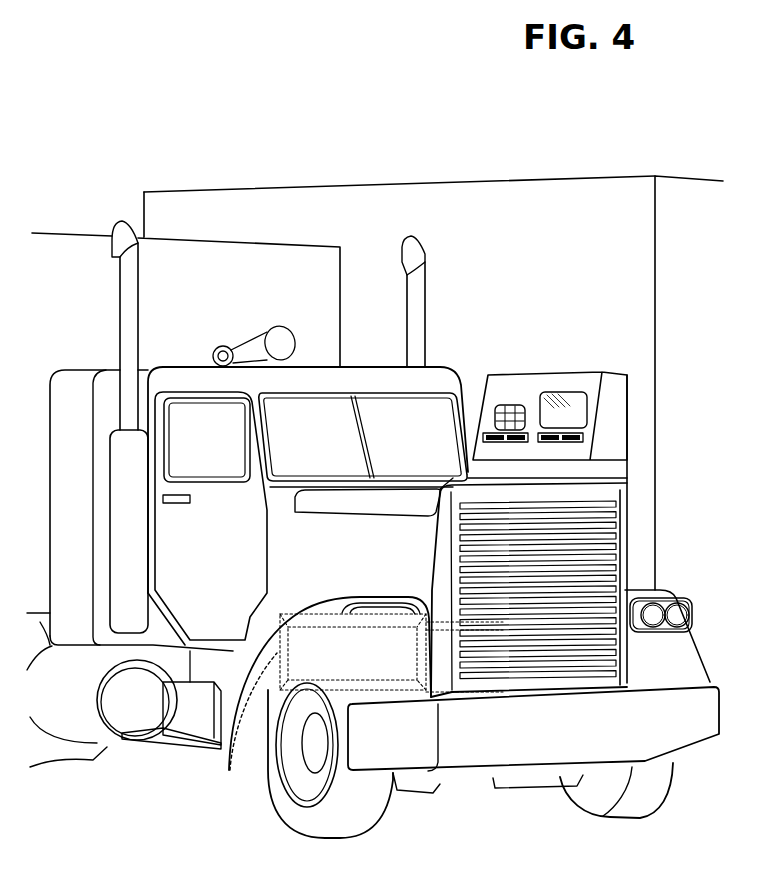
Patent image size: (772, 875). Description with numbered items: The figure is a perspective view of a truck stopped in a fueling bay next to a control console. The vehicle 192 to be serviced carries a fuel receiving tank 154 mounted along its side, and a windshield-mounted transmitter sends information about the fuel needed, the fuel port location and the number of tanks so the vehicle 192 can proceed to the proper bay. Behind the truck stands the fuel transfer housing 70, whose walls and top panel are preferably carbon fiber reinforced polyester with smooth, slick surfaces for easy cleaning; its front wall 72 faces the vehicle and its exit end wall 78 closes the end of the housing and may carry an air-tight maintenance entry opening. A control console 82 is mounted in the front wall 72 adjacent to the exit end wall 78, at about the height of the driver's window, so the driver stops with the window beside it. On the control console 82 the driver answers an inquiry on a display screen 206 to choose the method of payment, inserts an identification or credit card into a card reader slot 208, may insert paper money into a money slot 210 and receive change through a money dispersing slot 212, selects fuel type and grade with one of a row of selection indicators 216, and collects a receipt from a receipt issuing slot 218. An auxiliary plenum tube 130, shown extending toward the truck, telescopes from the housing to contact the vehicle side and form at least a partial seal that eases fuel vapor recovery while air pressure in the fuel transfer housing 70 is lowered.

The fuel transfer housing 70 is at (358, 178).
The front wall 72 is at (455, 195).
The exit end wall 78 is at (681, 192).
The control console 82 is at (617, 456).
The auxiliary plenum tube 130 is at (229, 770).
The fuel receiving tank 154 is at (140, 748).
The vehicle 192 is at (477, 795).
The display screen 206 is at (584, 400).
The card reader slot 208 is at (487, 432).
The money slot 210 is at (566, 443).
The money dispersing slot 212 is at (518, 432).
The selection indicators 216 is at (510, 404).
The receipt issuing slot 218 is at (547, 443).